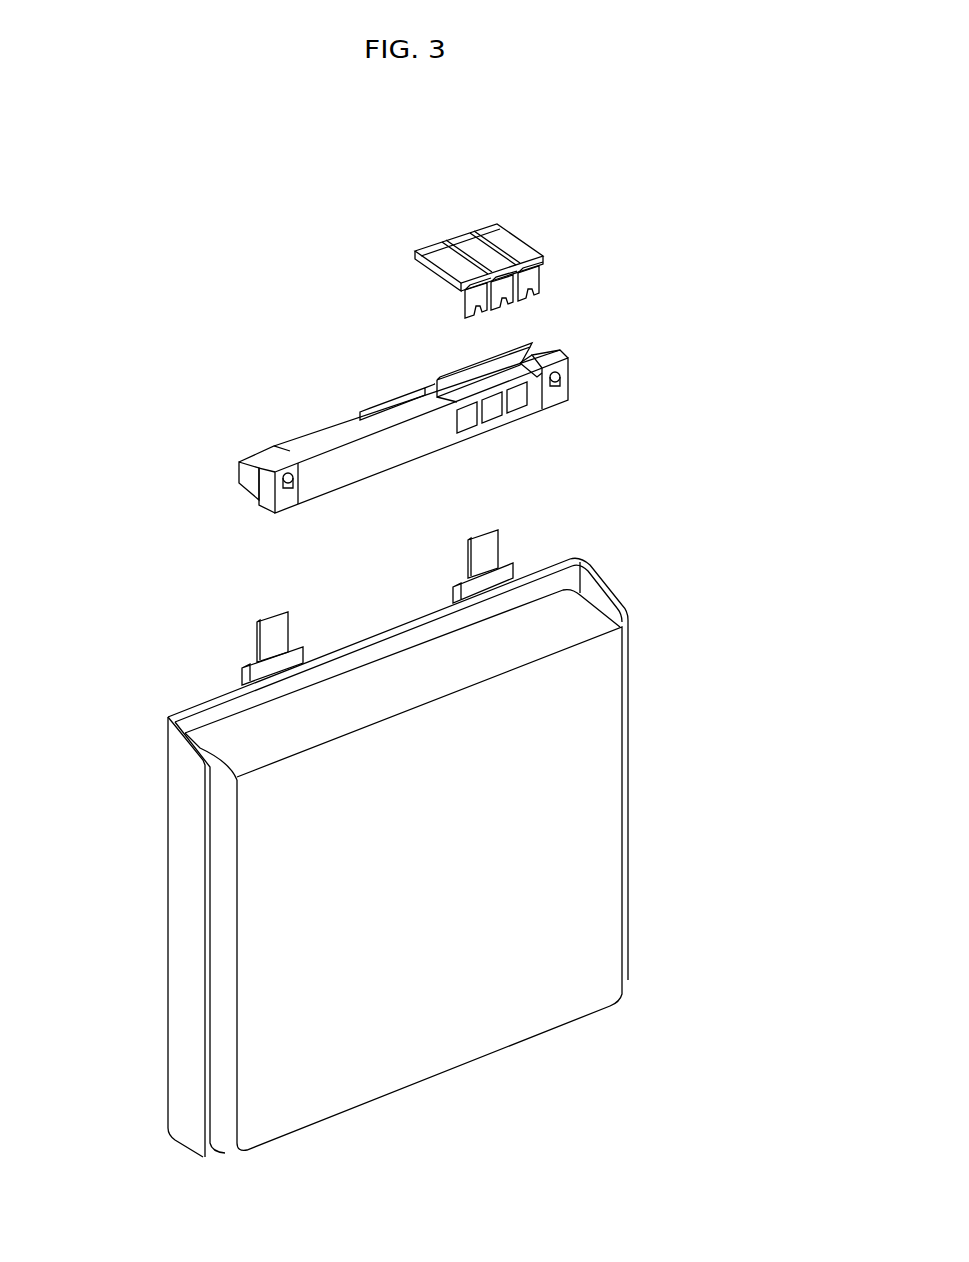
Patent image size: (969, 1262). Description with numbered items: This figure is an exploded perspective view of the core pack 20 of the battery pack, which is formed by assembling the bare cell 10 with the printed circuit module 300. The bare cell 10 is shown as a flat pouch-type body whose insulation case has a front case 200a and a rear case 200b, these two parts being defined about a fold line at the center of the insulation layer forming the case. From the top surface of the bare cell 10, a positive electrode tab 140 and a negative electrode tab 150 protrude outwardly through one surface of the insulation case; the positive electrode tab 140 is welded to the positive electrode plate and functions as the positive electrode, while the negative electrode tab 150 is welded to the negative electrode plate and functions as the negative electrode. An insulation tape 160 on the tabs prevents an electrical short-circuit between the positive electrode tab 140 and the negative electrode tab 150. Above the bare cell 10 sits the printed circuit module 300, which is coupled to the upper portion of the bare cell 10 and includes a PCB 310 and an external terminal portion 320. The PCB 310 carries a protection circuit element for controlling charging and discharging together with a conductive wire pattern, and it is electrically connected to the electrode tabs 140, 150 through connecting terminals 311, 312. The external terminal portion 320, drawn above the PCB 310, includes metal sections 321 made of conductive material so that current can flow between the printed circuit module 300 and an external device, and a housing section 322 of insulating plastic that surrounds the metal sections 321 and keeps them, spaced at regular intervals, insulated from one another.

The core pack 20 is at (205, 245).
The bare cell 10 is at (406, 817).
The positive electrode tab 140 is at (484, 545).
The negative electrode tab 150 is at (275, 625).
The insulation tape 160 is at (245, 668).
The front case 200a is at (563, 822).
The rear case 200b is at (168, 852).
The printed circuit module 300 is at (448, 370).
The PCB 310 is at (390, 445).
The connecting terminal 311 is at (292, 445).
The connecting terminal 312 is at (493, 370).
The external terminal portion 320 is at (457, 207).
The metal section 321 is at (462, 243).
The housing section 322 is at (504, 231).